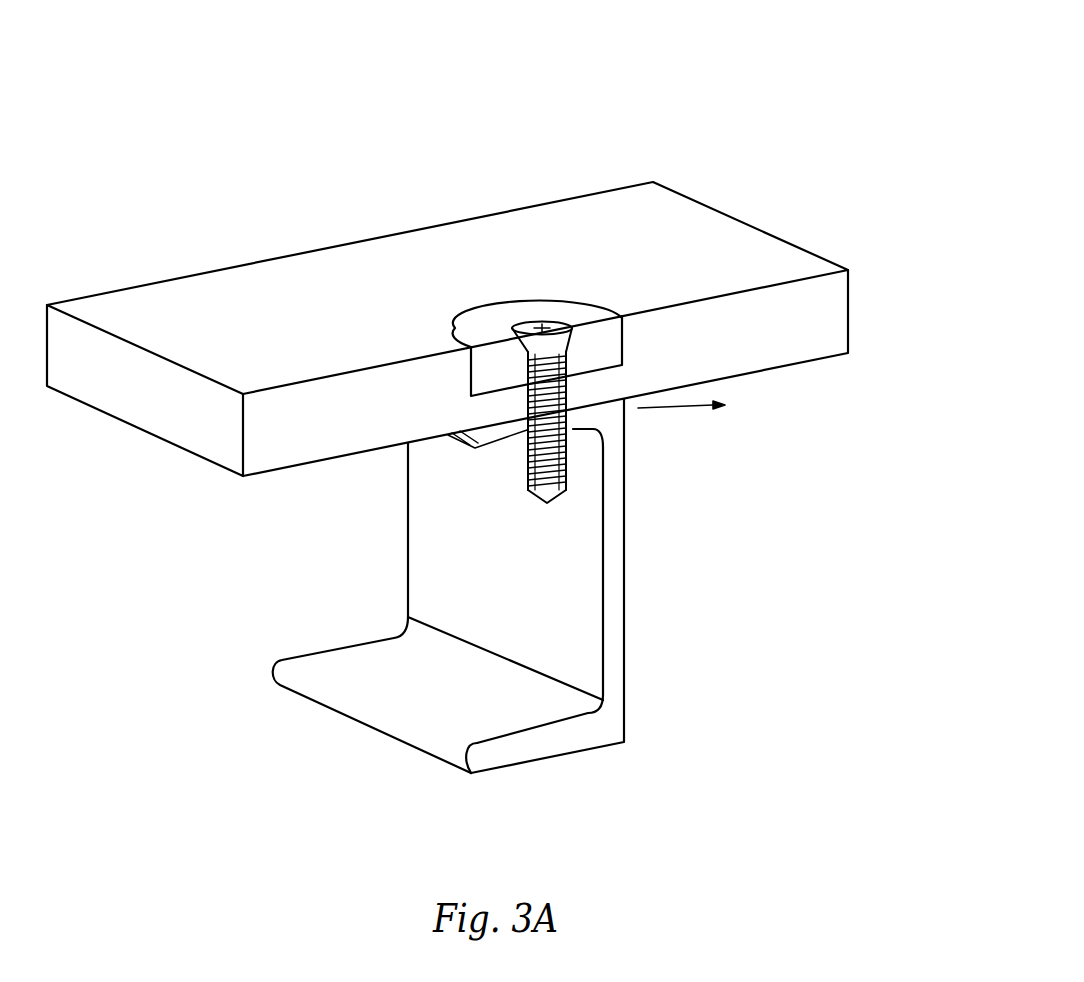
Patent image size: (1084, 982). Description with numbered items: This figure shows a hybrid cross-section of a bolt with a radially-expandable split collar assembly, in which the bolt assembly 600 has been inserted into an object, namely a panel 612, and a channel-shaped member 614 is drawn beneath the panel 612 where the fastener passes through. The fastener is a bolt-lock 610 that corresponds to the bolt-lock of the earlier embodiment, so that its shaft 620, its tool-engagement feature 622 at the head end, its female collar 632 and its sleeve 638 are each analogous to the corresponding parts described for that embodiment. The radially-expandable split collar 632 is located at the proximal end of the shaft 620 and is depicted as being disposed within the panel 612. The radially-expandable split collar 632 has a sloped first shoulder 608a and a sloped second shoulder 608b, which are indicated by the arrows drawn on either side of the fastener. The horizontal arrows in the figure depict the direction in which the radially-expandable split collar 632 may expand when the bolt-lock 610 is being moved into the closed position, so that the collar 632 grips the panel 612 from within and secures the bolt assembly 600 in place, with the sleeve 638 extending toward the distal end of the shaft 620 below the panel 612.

The bolt assembly 600 is at (502, 395).
The panel 612 is at (502, 308).
The channel bracket 614 is at (558, 253).
The tool-engagement feature 622 is at (530, 273).
The shaft 620 is at (527, 468).
The radially-expandable split collar 632 is at (525, 403).
The sleeve 638 is at (508, 486).
The sloped first shoulder 608a is at (401, 390).
The sloped second shoulder 608b is at (695, 342).
The bolt-lock 610 is at (605, 347).